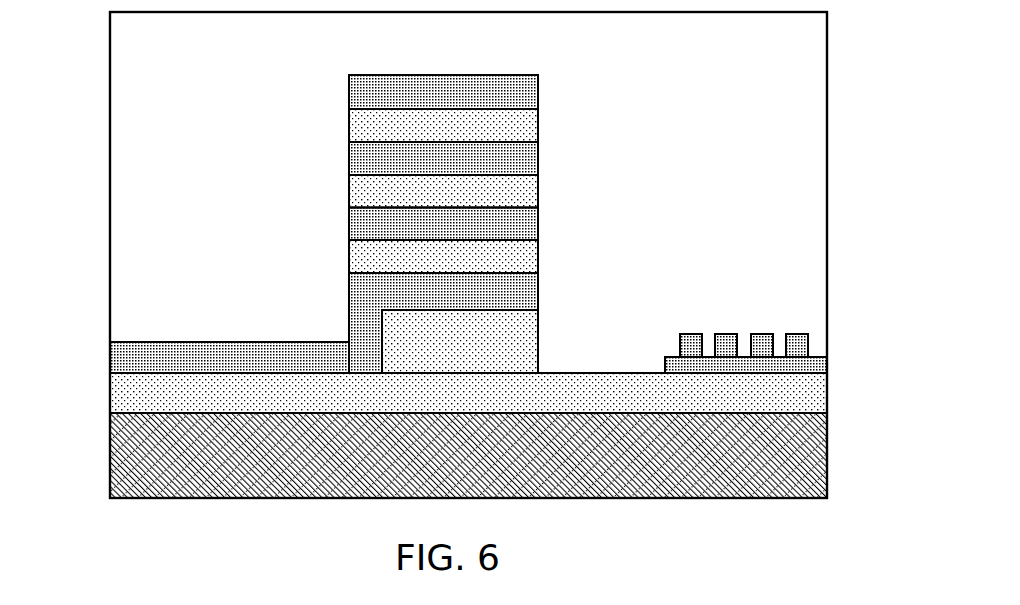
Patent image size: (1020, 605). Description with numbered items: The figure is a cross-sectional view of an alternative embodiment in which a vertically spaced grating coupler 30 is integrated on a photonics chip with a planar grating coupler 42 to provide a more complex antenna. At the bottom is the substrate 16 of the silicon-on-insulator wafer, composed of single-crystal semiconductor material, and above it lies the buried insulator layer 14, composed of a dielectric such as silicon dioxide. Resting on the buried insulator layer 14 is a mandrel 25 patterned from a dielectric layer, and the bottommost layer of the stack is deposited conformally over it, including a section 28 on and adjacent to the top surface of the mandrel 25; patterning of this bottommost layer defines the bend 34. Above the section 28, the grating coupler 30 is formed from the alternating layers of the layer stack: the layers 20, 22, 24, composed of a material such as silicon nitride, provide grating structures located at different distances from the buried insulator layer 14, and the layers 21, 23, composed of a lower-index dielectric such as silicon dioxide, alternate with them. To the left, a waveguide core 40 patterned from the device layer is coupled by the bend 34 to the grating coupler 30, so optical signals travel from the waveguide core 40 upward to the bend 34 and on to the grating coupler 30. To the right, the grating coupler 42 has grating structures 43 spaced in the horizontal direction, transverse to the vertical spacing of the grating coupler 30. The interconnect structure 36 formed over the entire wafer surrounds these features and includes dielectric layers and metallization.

The interconnect structure 36 is at (130, 161).
The grating coupler 30 is at (385, 224).
The layer 24 is at (373, 96).
The layer 23 is at (512, 128).
The layer 22 is at (373, 161).
The layer 21 is at (512, 196).
The layer 20 is at (373, 225).
The section 28 is at (485, 296).
The bend 34 is at (360, 320).
The mandrel 25 is at (463, 345).
The waveguide core 40 is at (145, 355).
The grating coupler 42 is at (781, 325).
The grating structures 43 is at (765, 348).
The buried insulator layer 14 is at (795, 397).
The substrate 16 is at (795, 468).